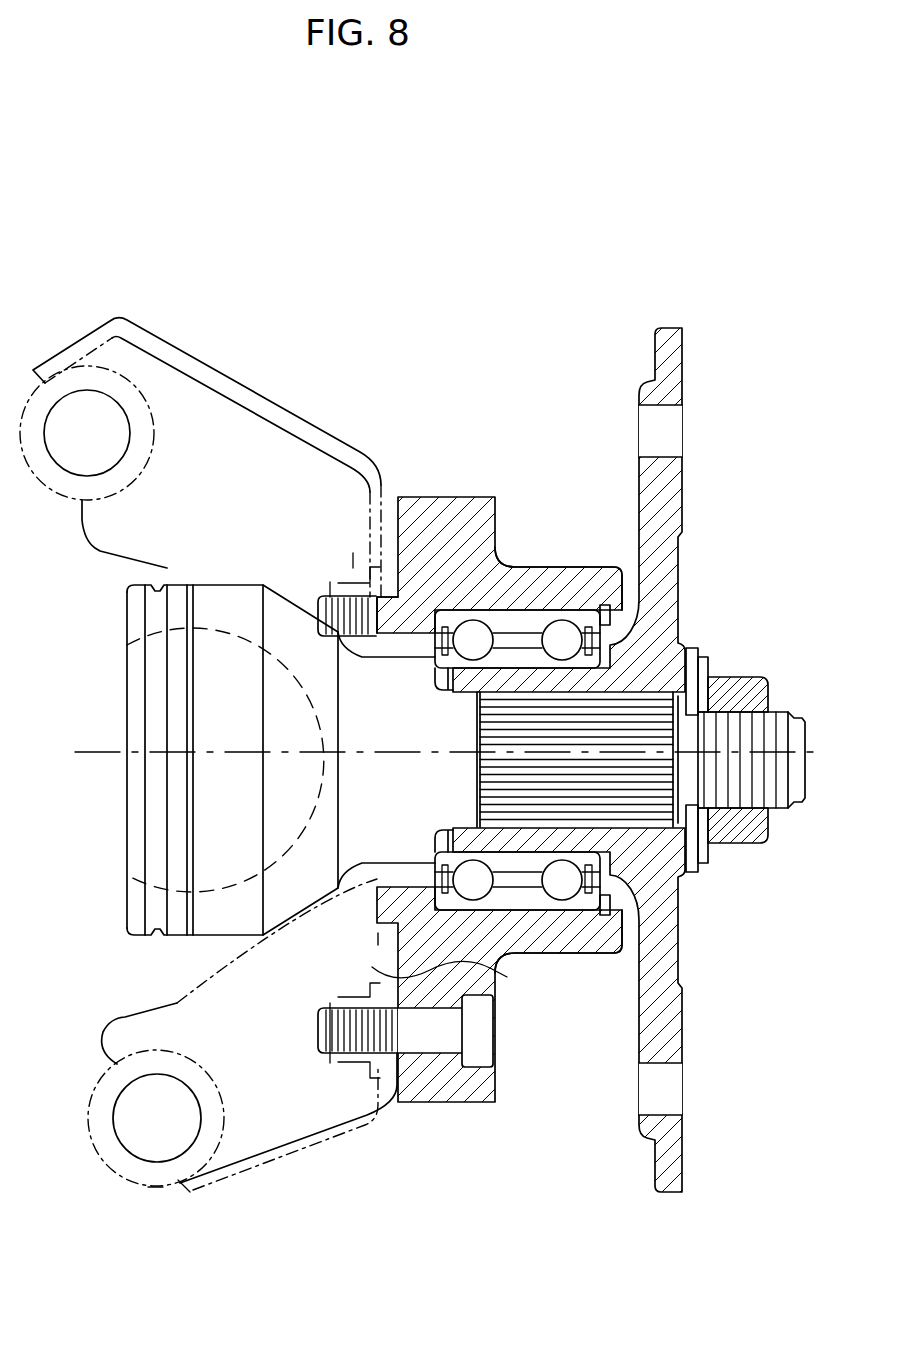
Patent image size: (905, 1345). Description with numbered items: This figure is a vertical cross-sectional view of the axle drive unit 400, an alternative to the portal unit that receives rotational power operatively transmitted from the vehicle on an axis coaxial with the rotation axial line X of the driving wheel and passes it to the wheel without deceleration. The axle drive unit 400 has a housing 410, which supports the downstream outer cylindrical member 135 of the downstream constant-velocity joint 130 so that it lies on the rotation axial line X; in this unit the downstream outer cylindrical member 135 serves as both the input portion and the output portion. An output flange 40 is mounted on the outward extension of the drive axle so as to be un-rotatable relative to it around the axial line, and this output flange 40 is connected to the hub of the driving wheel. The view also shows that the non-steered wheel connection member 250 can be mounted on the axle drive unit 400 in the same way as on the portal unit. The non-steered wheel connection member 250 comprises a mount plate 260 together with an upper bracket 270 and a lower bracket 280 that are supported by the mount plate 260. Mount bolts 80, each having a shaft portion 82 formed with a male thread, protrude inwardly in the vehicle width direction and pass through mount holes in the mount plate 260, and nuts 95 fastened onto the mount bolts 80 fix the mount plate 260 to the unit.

The output flange 40 is at (672, 507).
The mount bolt 80 is at (375, 619).
The shaft portion 82 is at (313, 600).
The nut 95 is at (353, 553).
The downstream constant-velocity joint 130 is at (360, 781).
The downstream outer cylindrical member 135 is at (203, 615).
The non-steered wheel connection member 250 is at (213, 418).
The mount plate 260 is at (380, 553).
The upper bracket 270 is at (108, 368).
The lower bracket 280 is at (158, 1172).
The axle drive unit 400 is at (497, 740).
The housing 410 is at (545, 570).
The rotation axial line X is at (818, 748).